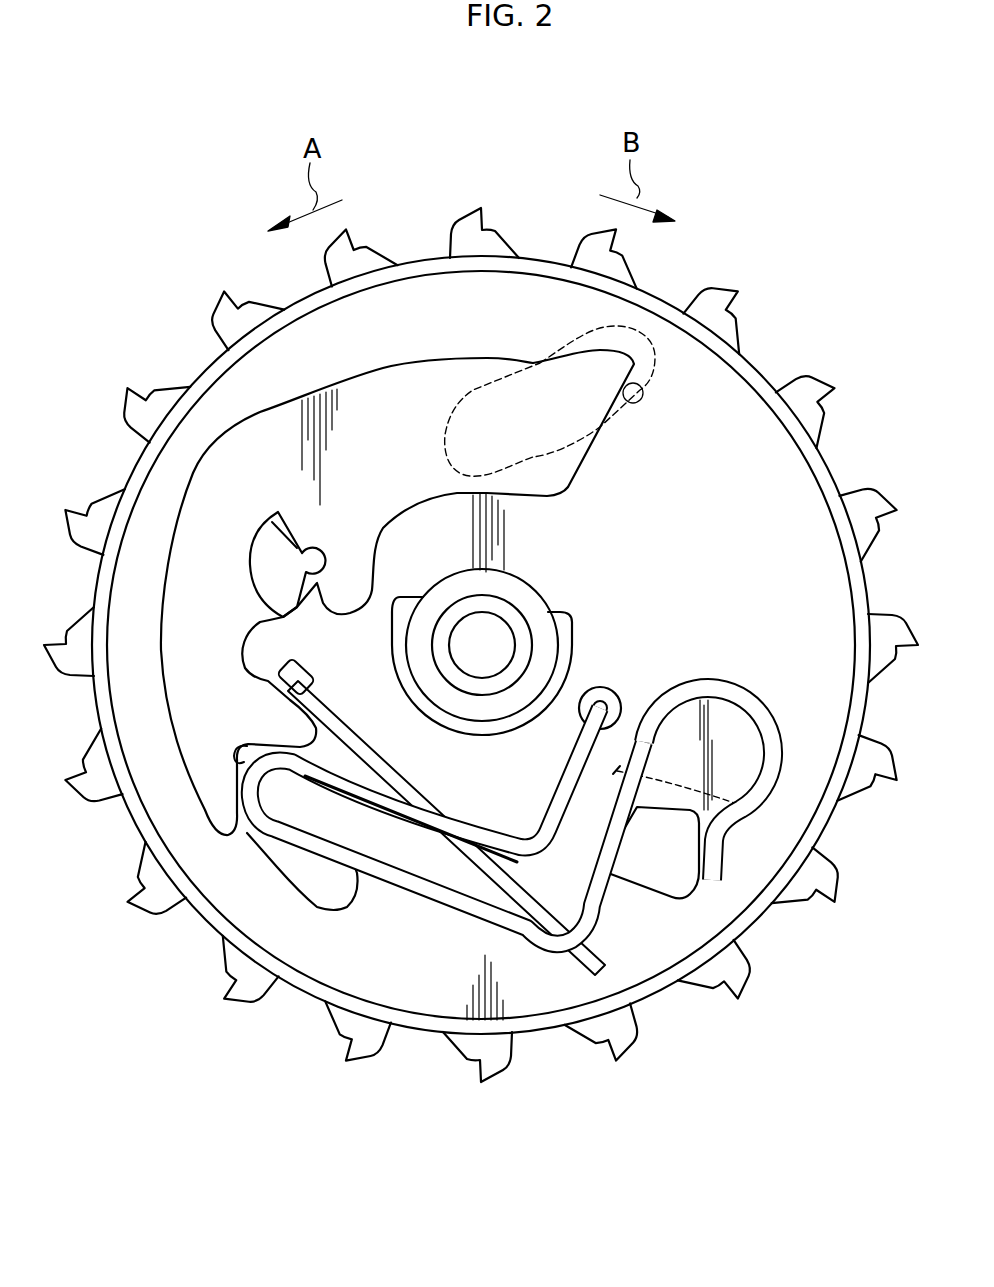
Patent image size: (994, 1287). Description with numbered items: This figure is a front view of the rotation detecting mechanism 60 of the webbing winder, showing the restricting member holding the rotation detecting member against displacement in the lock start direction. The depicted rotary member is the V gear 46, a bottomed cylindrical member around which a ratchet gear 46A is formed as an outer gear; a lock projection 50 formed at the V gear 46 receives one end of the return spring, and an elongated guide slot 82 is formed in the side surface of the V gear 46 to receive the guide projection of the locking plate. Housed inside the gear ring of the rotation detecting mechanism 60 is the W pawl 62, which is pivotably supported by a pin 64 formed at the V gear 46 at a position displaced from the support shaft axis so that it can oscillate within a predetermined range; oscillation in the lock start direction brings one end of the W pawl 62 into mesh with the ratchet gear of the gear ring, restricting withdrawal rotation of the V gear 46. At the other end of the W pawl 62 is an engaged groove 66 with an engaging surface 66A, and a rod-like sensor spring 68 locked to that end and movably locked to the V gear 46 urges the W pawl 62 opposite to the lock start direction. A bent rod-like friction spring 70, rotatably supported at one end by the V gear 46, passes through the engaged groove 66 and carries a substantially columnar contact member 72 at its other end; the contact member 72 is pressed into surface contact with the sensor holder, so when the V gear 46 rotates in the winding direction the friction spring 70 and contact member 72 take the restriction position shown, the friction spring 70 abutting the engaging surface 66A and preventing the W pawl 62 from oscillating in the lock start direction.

The rotation detecting mechanism 60 is at (481, 659).
The V gear 46 is at (481, 659).
The ratchet gear 46A is at (647, 1035).
The W pawl 62 is at (393, 365).
The pin 64 is at (296, 611).
The engaged groove 66 is at (295, 871).
The engaging surface 66A is at (236, 757).
The sensor spring 68 is at (352, 741).
The friction spring 70 is at (511, 794).
The contact member 72 is at (712, 690).
The lock projection 50 is at (687, 897).
The guide slot 82 is at (640, 404).